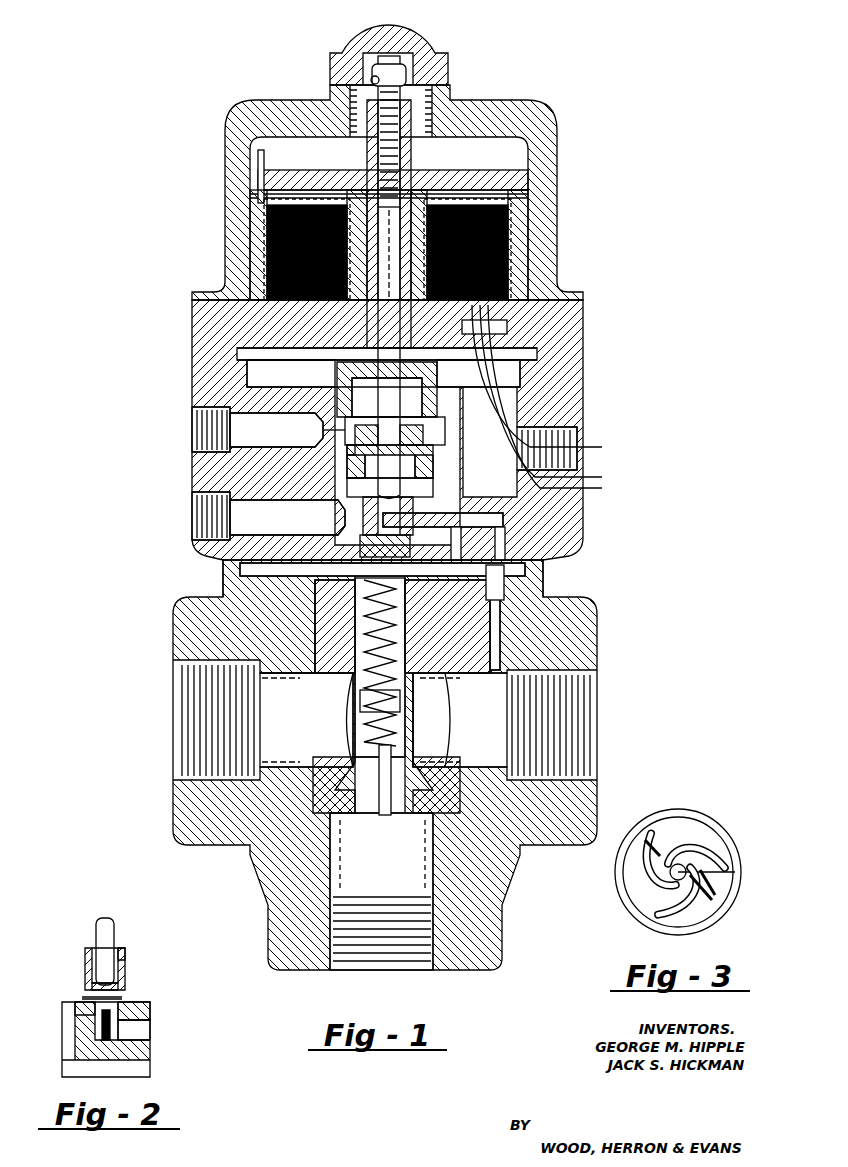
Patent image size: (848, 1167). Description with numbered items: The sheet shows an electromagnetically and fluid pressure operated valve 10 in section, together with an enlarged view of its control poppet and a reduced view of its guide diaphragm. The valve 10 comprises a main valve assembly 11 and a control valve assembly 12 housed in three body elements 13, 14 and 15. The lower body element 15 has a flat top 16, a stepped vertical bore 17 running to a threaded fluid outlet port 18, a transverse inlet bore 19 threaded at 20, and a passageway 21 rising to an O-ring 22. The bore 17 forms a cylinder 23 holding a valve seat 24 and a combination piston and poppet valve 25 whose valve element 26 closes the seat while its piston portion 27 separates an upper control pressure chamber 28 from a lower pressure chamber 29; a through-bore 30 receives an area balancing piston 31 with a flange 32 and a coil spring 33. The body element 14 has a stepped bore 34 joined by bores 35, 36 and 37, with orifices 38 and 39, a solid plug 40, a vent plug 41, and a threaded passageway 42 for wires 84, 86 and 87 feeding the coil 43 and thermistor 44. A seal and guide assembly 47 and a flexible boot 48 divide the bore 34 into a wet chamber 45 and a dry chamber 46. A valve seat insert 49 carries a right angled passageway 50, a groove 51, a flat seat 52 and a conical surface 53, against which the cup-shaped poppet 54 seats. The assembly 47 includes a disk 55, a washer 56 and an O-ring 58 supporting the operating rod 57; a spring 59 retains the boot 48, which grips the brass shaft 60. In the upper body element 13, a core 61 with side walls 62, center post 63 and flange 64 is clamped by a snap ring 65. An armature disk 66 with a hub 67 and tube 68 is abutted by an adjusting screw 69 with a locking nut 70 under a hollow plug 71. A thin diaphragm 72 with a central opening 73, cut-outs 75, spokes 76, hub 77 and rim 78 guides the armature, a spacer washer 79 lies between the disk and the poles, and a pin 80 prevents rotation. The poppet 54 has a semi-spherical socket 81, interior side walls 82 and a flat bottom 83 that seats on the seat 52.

In FIG. 1, the electromagnetically and fluid pressure operated valve 10 is at (175, 473).
In FIG. 1, the main valve assembly 11 is at (598, 642).
In FIG. 1, the control valve assembly 12 is at (603, 310).
In FIG. 1, the body element 13 is at (557, 120).
In FIG. 1, the body element 14 is at (583, 530).
In FIG. 1, the body element 15 is at (580, 597).
In FIG. 1, the flat generally circular top 16 is at (543, 580).
In FIG. 1, the stepped central vertical bore 17 is at (430, 716).
In FIG. 1, the fluid outlet port 18 is at (408, 945).
In FIG. 1, the transverse bore 19 is at (310, 722).
In FIG. 1, the threads 20 is at (190, 740).
In FIG. 1, the vertical bore or passageway 21 is at (500, 636).
In FIG. 1, the O-ring 22 is at (500, 590).
In FIG. 1, the cylinder 23 is at (300, 655).
In FIG. 1, the valve seat 24 is at (340, 790).
In FIG. 1, the combination piston and poppet type valve 25 is at (452, 622).
In FIG. 1, the valve element 26 is at (340, 745).
In FIG. 1, the piston portion 27 is at (312, 612).
In FIG. 1, the upper control pressure chamber 28 is at (315, 563).
In FIG. 1, the lower pressure chamber 29 is at (420, 690).
In FIG. 1, the stepped central through-bore 30 is at (358, 700).
In FIG. 1, the area balancing piston 31 is at (358, 652).
In FIG. 1, the small flange 32 is at (337, 612).
In FIG. 1, the compression type coil spring 33 is at (400, 640).
In FIG. 1, the stepped central bore 34 is at (413, 510).
In FIG. 1, the horizontal bore 35 is at (300, 430).
In FIG. 1, the horizontal bore 36 is at (305, 518).
In FIG. 1, the horizontal bore 37 is at (503, 520).
In FIG. 1, the orifice 38 is at (505, 545).
In FIG. 1, the orifice 39 is at (475, 548).
In FIG. 1, the solid plug 40 is at (192, 516).
In FIG. 1, the breather or vent plug 41 is at (192, 420).
In FIG. 1, the internally threaded passageway 42 is at (577, 435).
In FIG. 1, the electric coil 43 is at (510, 250).
In FIG. 1, the thermistor 44 is at (507, 330).
In FIG. 1, the wet chamber 45 is at (360, 488).
In FIG. 1, the dry chamber 46 is at (430, 428).
In FIG. 1, the seal and guide assembly 47 is at (347, 452).
In FIG. 1, the flexible boot 48 is at (340, 375).
In FIG. 1, the cylindrical valve seat insert 49 is at (360, 545).
In FIG. 2, the cylindrical valve seat insert 49 is at (95, 1038).
In FIG. 2, the right angled passageway 50 is at (108, 1030).
In FIG. 2, the fluid conducting groove 51 is at (70, 1065).
In FIG. 2, the circular flat surface 52 is at (118, 1004).
In FIG. 2, the conical tapered surface 53 is at (75, 1008).
In FIG. 1, the cup-shaped valve element or poppet 54 is at (400, 490).
In FIG. 2, the cup-shaped valve element or poppet 54 is at (85, 955).
In FIG. 1, the circular disk 55 is at (433, 470).
In FIG. 1, the washer 56 is at (433, 452).
In FIG. 1, the operating rod 57 is at (423, 435).
In FIG. 2, the operating rod 57 is at (98, 925).
In FIG. 1, the O-ring 58 is at (350, 465).
In FIG. 1, the expansible type coil spring 59 is at (440, 372).
In FIG. 1, the non-magnetic brass shaft 60 is at (365, 400).
In FIG. 1, the core 61 is at (265, 320).
In FIG. 1, the side walls 62 is at (265, 245).
In FIG. 1, the hollow center post 63 is at (355, 210).
In FIG. 1, the peripheral flange 64 is at (237, 354).
In FIG. 1, the snap ring 65 is at (282, 362).
In FIG. 1, the armature disk 66 is at (470, 180).
In FIG. 1, the hollow hub 67 is at (411, 160).
In FIG. 1, the tube 68 is at (365, 322).
In FIG. 1, the adjusting screw 69 is at (389, 62).
In FIG. 1, the locking nut 70 is at (374, 76).
In FIG. 1, the externally threaded hollow plug 71 is at (430, 40).
In FIG. 1, the thin diaphragm 72 is at (300, 180).
In FIG. 3, the thin diaphragm 72 is at (662, 818).
In FIG. 3, the central opening 73 is at (670, 865).
In FIG. 3, the cut-outs 75 is at (722, 846).
In FIG. 3, the curved flexible connecting portions or spokes 76 is at (644, 842).
In FIG. 3, the hub 77 is at (735, 872).
In FIG. 3, the rim 78 is at (735, 804).
In FIG. 1, the thin spacer washer 79 is at (528, 197).
In FIG. 1, the non-magnetic pin 80 is at (258, 163).
In FIG. 2, the semi-spherical socket 81 is at (118, 983).
In FIG. 2, the interior side walls 82 is at (125, 953).
In FIG. 2, the flat bottom 83 is at (82, 998).
In FIG. 1, the insulated electric wire 84 is at (602, 488).
In FIG. 1, the insulated electric wire 86 is at (602, 447).
In FIG. 1, the insulated electric wire 87 is at (602, 477).